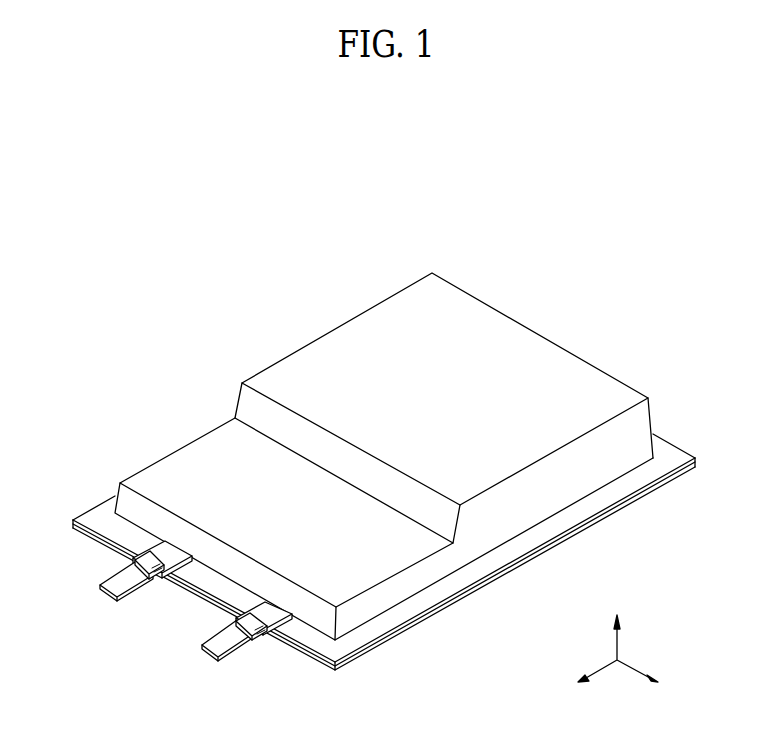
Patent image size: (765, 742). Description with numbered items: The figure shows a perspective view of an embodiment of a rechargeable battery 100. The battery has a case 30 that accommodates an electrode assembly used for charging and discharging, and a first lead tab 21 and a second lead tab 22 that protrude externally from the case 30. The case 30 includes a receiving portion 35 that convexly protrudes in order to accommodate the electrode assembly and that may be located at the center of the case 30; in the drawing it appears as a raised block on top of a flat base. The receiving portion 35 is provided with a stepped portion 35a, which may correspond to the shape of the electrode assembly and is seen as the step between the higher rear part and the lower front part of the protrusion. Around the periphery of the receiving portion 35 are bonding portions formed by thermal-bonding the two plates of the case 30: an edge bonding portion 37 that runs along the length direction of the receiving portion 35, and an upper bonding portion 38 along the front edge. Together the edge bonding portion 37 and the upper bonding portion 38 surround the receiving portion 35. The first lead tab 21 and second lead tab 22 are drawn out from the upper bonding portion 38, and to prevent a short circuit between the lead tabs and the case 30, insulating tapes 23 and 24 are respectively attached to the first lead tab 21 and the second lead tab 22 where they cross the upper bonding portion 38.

The rechargeable battery 100 is at (365, 188).
The case 30 is at (465, 262).
The receiving portion 35 is at (500, 323).
The stepped portion 35a is at (244, 404).
The edge bonding portion 37 is at (432, 602).
The upper bonding portion 38 is at (213, 590).
The first lead tab 21 is at (117, 592).
The second lead tab 22 is at (218, 650).
The insulating tape 23 is at (132, 556).
The insulating tape 24 is at (267, 636).